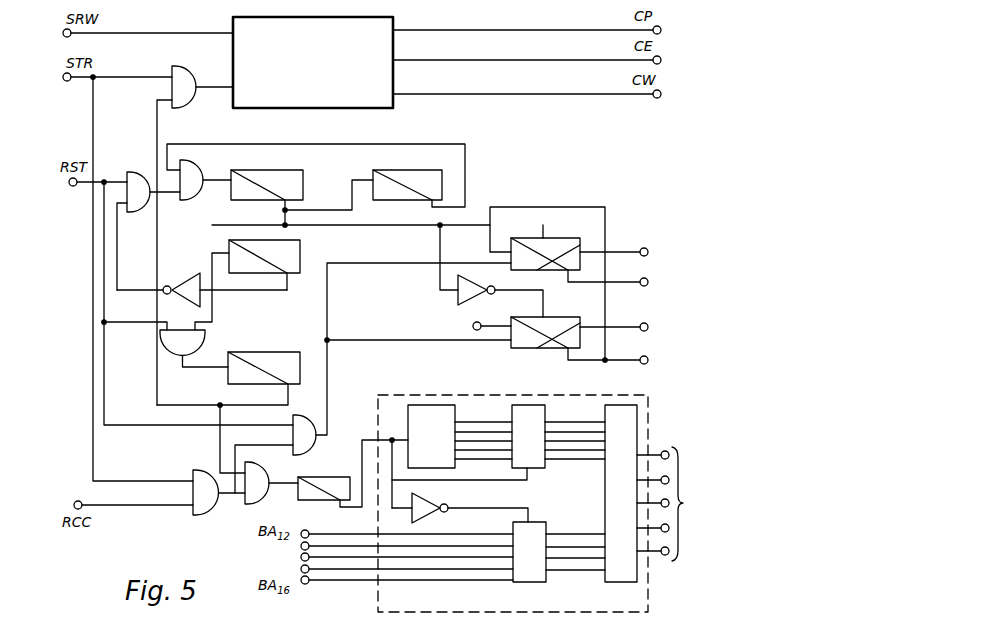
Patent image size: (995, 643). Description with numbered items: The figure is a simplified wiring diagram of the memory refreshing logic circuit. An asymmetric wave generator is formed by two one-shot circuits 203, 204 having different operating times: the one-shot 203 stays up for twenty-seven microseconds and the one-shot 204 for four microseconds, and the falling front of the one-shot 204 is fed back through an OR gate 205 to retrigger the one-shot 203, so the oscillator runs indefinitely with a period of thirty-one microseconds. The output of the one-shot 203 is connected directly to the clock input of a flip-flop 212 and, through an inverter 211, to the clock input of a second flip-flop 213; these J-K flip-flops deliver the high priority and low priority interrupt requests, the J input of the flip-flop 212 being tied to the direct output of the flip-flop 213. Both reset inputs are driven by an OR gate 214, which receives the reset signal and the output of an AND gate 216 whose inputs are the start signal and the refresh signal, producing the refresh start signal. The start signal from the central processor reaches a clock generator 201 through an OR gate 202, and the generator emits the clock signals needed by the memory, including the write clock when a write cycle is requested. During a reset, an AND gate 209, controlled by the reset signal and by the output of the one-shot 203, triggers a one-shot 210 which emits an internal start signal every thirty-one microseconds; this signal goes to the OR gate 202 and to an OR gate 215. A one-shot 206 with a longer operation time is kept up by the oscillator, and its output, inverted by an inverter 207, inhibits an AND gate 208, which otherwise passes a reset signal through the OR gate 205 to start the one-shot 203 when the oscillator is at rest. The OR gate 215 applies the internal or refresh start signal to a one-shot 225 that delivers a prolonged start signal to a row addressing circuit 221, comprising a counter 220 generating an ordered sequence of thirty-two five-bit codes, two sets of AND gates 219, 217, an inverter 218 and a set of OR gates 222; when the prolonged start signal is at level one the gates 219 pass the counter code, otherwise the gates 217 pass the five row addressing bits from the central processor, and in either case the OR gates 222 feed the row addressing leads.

The clock generator 201 is at (313, 54).
The OR gate 202 is at (195, 227).
The one-shot circuit 203 is at (302, 189).
The one-shot circuit 204 is at (412, 175).
The OR gate 205 is at (316, 175).
The one-shot circuit 206 is at (342, 276).
The inverter 207 is at (202, 281).
The AND gate 208 is at (148, 220).
The AND gate 209 is at (196, 348).
The one-shot circuit 210 is at (229, 402).
The inverter 211 is at (487, 271).
The flip-flop 212 is at (582, 283).
The flip-flop 213 is at (501, 334).
The OR gate 214 is at (373, 378).
The OR gate 215 is at (271, 482).
The AND gate 216 is at (219, 501).
The set of AND gates 217 is at (559, 541).
The inverter 218 is at (460, 501).
The set of AND gates 219 is at (498, 434).
The counter 220 is at (446, 456).
The row addressing circuit 221 is at (513, 515).
The set of OR gates 222 is at (653, 504).
The one-shot circuit 225 is at (353, 480).